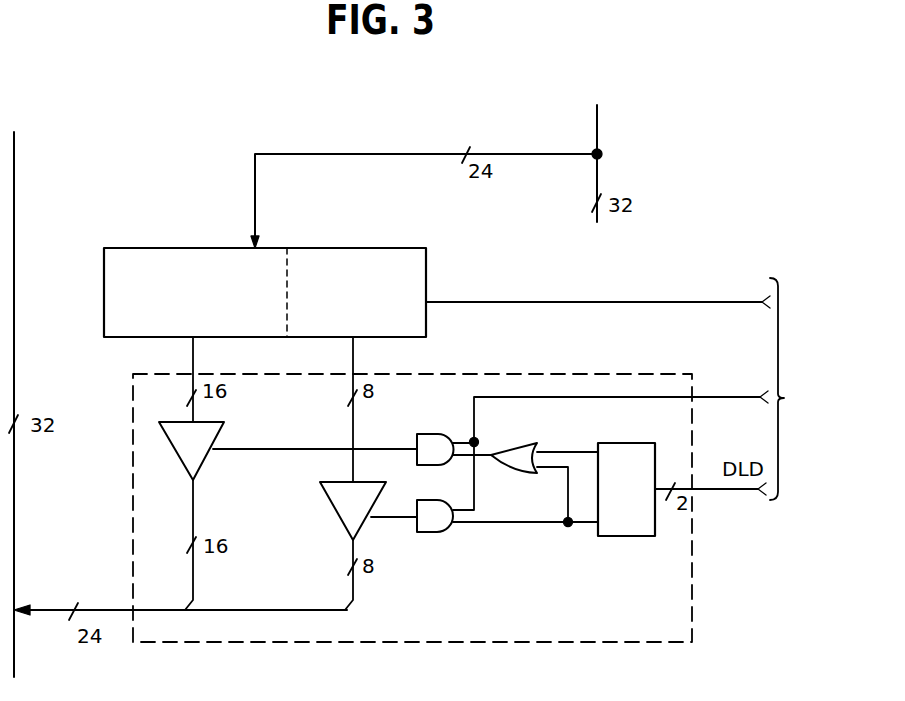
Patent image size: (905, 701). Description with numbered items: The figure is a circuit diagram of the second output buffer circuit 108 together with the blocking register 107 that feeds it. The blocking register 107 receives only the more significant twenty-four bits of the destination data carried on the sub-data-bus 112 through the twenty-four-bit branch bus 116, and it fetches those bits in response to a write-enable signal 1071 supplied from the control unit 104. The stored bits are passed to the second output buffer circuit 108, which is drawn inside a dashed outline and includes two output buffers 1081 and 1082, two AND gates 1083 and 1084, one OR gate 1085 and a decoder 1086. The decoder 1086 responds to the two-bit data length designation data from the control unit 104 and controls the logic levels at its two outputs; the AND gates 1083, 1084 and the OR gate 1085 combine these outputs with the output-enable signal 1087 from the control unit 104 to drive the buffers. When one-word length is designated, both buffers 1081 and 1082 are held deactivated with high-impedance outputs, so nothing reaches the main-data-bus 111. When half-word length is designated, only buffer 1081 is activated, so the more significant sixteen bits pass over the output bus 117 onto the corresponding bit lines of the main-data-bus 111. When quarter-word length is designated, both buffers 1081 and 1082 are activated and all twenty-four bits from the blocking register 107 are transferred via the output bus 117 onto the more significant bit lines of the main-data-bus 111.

The control unit 104 is at (809, 389).
The blocking register 107 is at (427, 284).
The second output buffer circuit 108 is at (440, 642).
The main-data-bus 111 is at (22, 385).
The sub-data-bus 112 is at (604, 172).
The branch bus 116 is at (430, 154).
The output bus 117 is at (38, 610).
The write-enable signal 1071 is at (598, 290).
The output buffer 1081 is at (207, 457).
The output buffer 1082 is at (325, 502).
The AND gate 1083 is at (417, 437).
The AND gate 1084 is at (415, 525).
The OR gate 1085 is at (498, 445).
The decoder 1086 is at (612, 538).
The output-enable signal 1087 is at (610, 438).